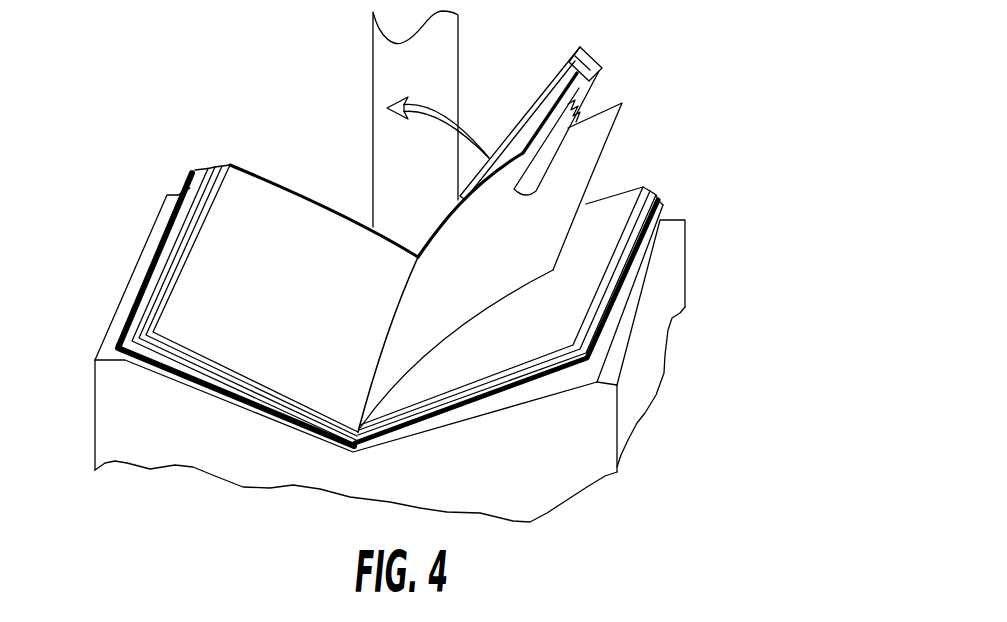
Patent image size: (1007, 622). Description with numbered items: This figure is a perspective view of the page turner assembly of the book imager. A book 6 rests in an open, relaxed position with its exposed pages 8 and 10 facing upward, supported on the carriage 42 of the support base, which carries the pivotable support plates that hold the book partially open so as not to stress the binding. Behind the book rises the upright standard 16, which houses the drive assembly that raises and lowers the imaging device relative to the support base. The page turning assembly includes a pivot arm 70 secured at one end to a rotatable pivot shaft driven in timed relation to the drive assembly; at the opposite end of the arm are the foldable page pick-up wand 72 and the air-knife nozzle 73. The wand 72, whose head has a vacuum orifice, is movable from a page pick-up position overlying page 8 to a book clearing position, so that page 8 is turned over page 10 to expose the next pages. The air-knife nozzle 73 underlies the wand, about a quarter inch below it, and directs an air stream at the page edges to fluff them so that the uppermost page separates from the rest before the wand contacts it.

The book 6 is at (367, 275).
The exposed page 8 is at (580, 164).
The exposed page 10 is at (247, 190).
The upright standard 16 is at (382, 72).
The carriage 42 is at (632, 405).
The pivot arm 70 is at (590, 58).
The foldable page pick-up wand 72 is at (525, 118).
The air-knife nozzle 73 is at (583, 96).